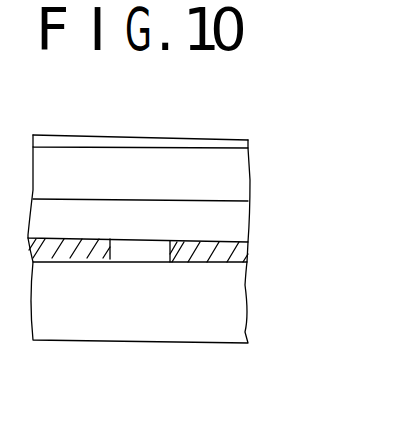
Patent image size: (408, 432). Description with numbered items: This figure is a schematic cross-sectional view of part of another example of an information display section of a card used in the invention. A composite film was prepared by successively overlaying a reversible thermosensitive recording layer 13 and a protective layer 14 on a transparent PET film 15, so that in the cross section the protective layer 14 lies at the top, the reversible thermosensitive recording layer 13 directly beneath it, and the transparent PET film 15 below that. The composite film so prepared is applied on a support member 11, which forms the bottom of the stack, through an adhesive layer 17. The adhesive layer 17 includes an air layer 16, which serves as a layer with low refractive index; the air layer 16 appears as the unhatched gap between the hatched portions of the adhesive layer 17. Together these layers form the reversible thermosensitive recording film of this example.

The support member 11 is at (146, 333).
The reversible thermosensitive recording layer 13 is at (241, 163).
The protective layer 14 is at (183, 140).
The transparent PET film 15 is at (240, 220).
The air layer 16 is at (163, 247).
The adhesive layer 17 is at (242, 256).